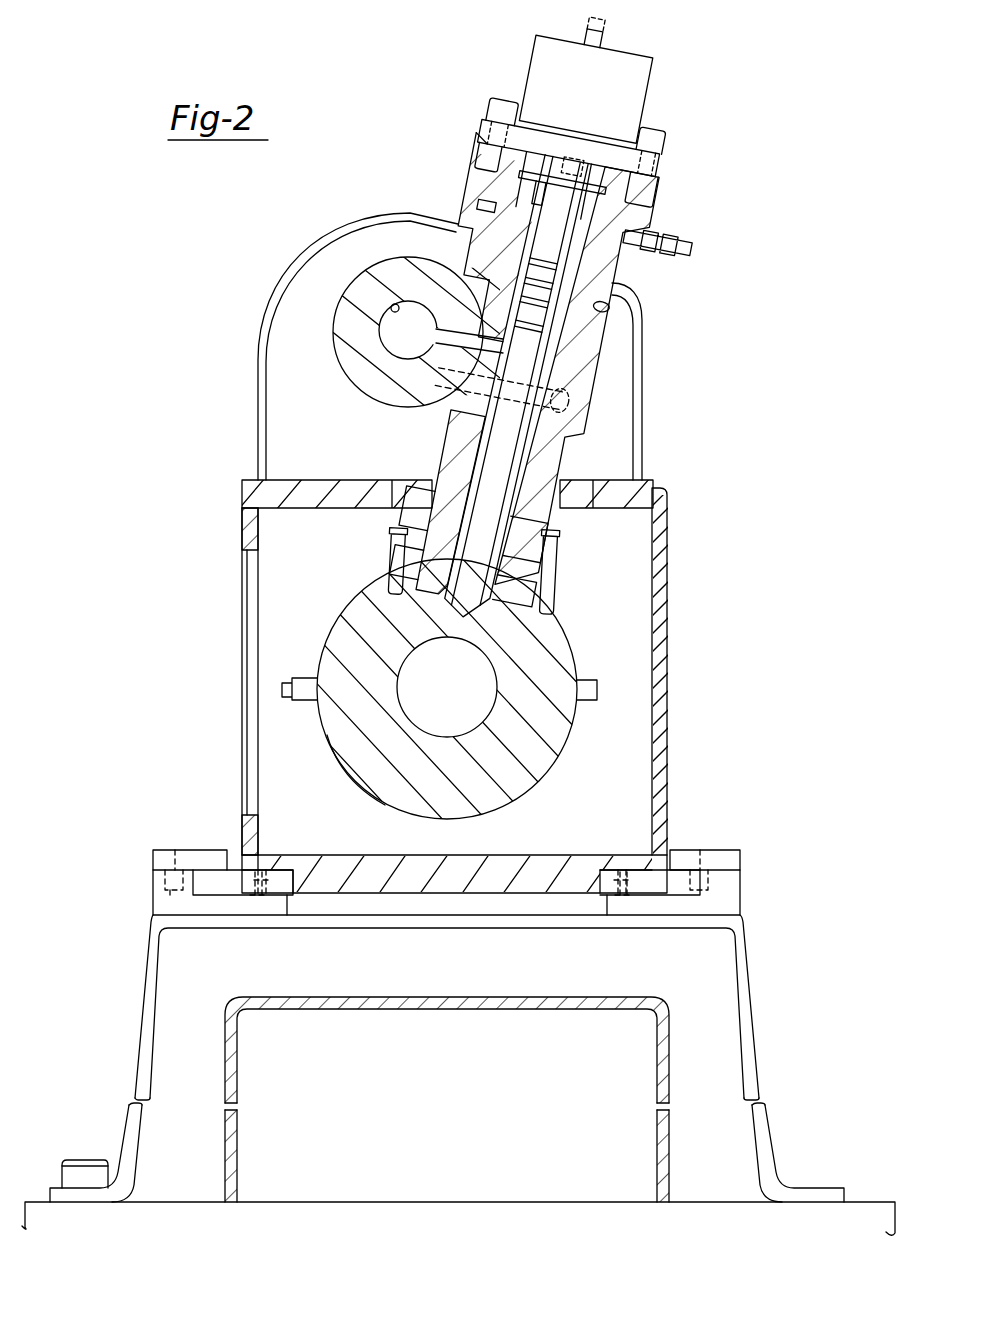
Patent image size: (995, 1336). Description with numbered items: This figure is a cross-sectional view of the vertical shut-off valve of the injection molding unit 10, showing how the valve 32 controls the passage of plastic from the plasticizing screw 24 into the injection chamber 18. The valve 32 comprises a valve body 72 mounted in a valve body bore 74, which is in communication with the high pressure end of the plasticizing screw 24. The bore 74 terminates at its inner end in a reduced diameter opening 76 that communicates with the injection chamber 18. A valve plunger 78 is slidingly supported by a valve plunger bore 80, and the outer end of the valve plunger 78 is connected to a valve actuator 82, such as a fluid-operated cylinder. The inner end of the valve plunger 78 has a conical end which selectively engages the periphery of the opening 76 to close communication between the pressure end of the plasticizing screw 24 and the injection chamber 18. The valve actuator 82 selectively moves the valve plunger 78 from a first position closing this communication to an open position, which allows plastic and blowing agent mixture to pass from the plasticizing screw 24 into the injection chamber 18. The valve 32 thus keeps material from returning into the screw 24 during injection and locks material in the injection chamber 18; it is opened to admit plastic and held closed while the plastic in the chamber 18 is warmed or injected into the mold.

The injection molding unit 10 is at (318, 212).
The injection chamber 18 is at (452, 703).
The plasticizing screw 24 is at (470, 226).
The valve 32 is at (640, 100).
The valve body 72 is at (577, 390).
The valve body bore 74 is at (601, 307).
The reduced diameter opening 76 is at (395, 592).
The valve plunger 78 is at (545, 367).
The valve plunger bore 80 is at (530, 477).
The valve actuator 82 is at (540, 78).